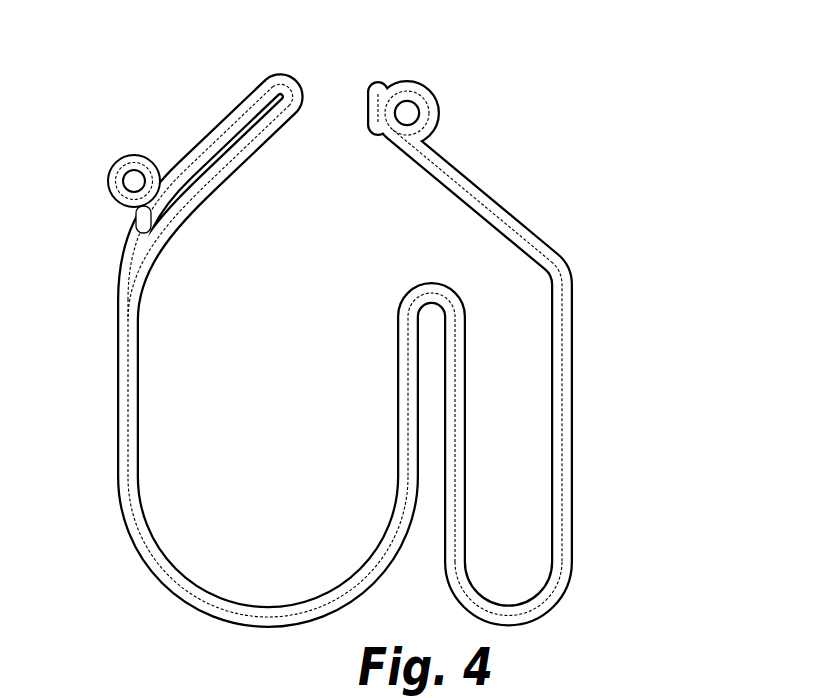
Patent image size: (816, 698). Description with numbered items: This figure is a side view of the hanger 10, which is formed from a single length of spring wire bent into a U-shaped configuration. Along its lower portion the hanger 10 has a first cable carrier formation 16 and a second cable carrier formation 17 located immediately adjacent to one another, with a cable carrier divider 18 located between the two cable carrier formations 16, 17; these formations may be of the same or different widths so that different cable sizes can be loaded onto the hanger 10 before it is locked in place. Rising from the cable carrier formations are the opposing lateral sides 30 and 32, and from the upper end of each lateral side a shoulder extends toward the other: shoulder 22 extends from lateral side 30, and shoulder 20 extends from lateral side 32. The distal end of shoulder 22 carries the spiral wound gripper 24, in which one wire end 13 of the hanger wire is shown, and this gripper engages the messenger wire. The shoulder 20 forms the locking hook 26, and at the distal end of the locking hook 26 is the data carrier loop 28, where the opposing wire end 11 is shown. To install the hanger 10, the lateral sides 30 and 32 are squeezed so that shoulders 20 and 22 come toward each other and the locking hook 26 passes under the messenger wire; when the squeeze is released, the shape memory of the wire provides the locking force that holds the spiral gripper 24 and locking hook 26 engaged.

The hanger 10 is at (133, 549).
The opposing end of the wire 11 is at (137, 230).
The opposing end of the wire 13 is at (381, 81).
The first cable carrier formation 16 is at (508, 632).
The second cable carrier formation 17 is at (272, 628).
The cable carrier divider 18 is at (397, 322).
The shoulder 20 is at (226, 186).
The shoulder 22 is at (497, 212).
The spiral gripper 24 is at (432, 90).
The locking hook 26 is at (244, 98).
The data carrier loop 28 is at (140, 154).
The lateral side 30 is at (573, 405).
The lateral side 32 is at (117, 375).